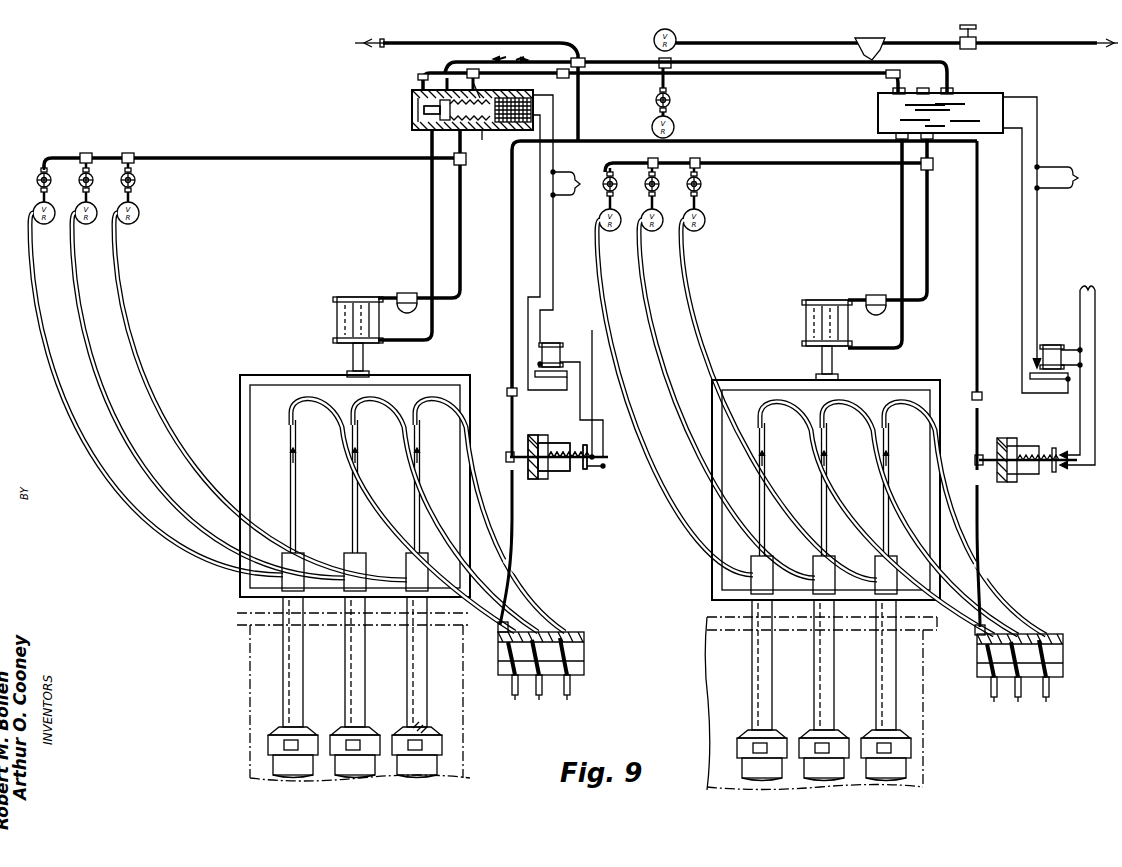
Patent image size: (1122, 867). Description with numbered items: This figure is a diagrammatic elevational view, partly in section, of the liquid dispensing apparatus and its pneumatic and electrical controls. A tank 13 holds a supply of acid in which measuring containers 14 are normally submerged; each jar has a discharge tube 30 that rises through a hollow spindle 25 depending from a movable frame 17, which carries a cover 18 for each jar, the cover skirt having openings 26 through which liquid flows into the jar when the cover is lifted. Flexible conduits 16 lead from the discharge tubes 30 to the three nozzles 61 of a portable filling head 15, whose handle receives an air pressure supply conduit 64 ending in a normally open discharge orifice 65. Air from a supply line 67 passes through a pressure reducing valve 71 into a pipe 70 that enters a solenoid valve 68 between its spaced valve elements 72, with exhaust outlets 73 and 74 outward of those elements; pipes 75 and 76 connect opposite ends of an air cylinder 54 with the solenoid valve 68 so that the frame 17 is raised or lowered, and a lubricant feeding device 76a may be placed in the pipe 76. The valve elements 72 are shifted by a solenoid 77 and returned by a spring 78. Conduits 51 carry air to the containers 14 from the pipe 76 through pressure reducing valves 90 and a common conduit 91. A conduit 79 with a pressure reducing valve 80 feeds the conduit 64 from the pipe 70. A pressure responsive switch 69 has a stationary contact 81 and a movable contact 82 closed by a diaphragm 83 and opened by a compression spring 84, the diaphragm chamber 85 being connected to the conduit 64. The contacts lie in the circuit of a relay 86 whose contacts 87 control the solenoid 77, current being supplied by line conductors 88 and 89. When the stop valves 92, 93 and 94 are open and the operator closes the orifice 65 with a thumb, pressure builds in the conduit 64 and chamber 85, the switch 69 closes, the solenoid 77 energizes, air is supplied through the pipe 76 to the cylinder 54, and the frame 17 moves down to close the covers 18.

The tank 13 is at (250, 664).
The measuring containers 14 is at (437, 768).
The filling head 15 is at (586, 645).
The conduits 16 is at (376, 498).
The movable frame 17 is at (238, 402).
The cover 18 is at (442, 748).
The hollow spindle 25 is at (345, 680).
The openings 26 is at (420, 742).
The discharge tube 30 is at (352, 526).
The conduits 51 is at (110, 398).
The air cylinder 54 is at (336, 326).
The nozzles 61 is at (570, 690).
The air pressure supply conduit 64 is at (522, 556).
The air discharge orifice 65 is at (498, 626).
The air pressure supply line 67 is at (995, 43).
The solenoid valve 68 is at (412, 94).
The pressure responsive switch 69 is at (1050, 492).
The pipe 70 is at (636, 62).
The pressure reducing valve 71 is at (654, 42).
The valve elements 72 is at (424, 108).
The exhaust outlet 73 is at (424, 76).
The exhaust outlet 74 is at (478, 86).
The pipe 75 is at (430, 226).
The pipe 76 is at (462, 226).
The lubricant feeding device 76a is at (407, 294).
The solenoid 77 is at (503, 130).
The spring 78 is at (478, 140).
The conduit 79 is at (600, 141).
The pressure reducing valve 80 is at (675, 125).
The stationary contact 81 is at (590, 470).
The movable contact 82 is at (606, 467).
The diaphragm 83 is at (548, 448).
The compression spring 84 is at (554, 472).
The chamber 85 is at (530, 480).
The relay 86 is at (540, 352).
The contacts 87 is at (538, 364).
The line conductors 88 is at (592, 330).
The line conductors 89 is at (826, 181).
The pressure reducing valves 90 is at (140, 214).
The common conduit 91 is at (268, 152).
The stop valve 92 is at (962, 36).
The stop valve 93 is at (672, 101).
The stop valve 94 is at (121, 186).